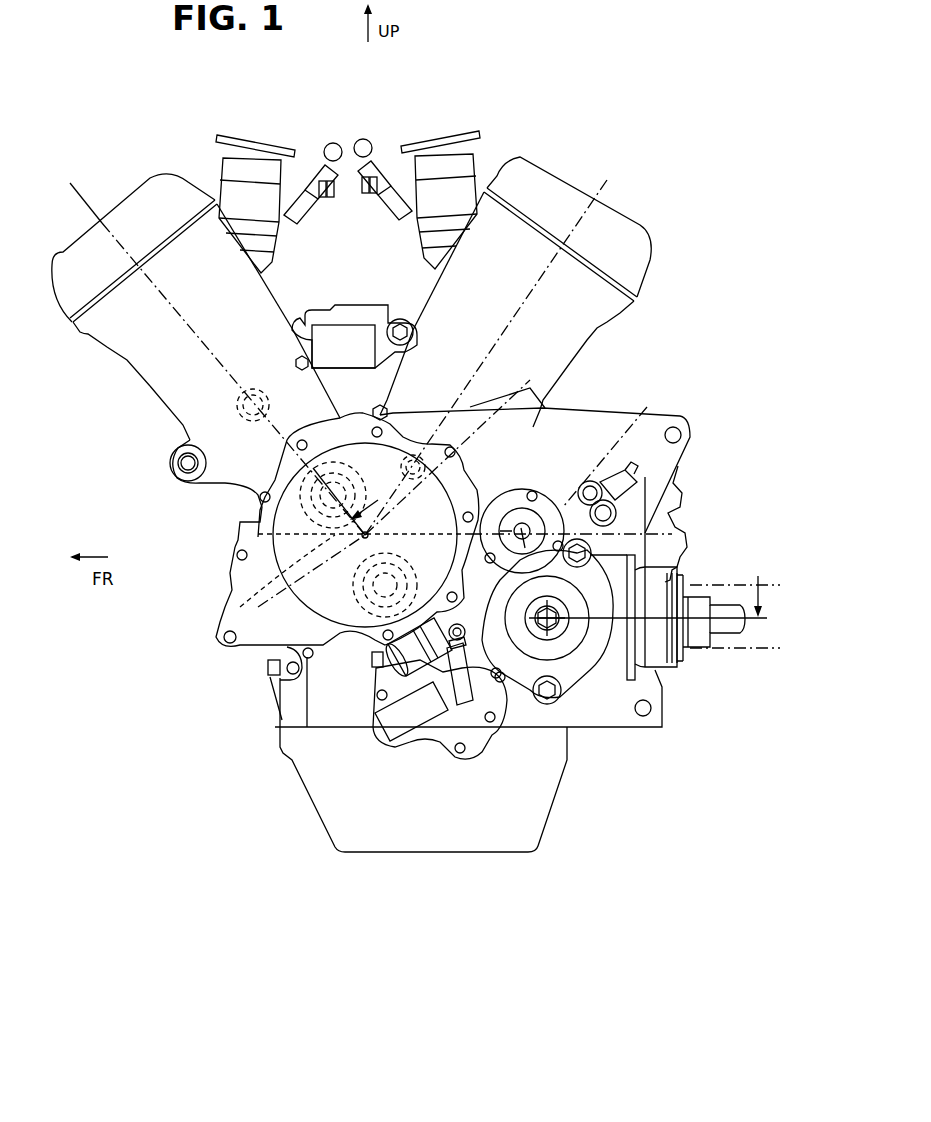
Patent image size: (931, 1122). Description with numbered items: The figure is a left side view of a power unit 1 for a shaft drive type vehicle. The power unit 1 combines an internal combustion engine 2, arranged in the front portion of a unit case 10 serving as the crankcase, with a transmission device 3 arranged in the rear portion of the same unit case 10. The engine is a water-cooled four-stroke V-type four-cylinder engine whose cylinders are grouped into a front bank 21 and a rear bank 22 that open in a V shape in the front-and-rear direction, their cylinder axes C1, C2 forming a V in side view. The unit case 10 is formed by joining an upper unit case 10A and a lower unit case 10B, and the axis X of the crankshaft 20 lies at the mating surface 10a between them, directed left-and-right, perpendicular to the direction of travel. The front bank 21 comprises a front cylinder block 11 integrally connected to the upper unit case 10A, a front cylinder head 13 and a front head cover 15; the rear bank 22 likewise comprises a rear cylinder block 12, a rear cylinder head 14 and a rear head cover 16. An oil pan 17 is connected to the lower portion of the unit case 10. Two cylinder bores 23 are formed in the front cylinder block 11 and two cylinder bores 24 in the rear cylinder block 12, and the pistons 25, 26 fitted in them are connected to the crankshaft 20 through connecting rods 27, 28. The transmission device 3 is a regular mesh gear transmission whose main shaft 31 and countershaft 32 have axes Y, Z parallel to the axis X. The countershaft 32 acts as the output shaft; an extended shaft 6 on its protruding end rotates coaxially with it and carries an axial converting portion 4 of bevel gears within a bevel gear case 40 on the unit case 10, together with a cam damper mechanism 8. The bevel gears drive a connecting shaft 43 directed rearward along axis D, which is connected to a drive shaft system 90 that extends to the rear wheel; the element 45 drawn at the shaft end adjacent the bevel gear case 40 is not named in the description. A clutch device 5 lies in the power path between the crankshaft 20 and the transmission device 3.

The power unit 1 is at (688, 104).
The internal combustion engine 2 is at (229, 505).
The transmission device 3 is at (705, 468).
The axial converting portion 4 is at (555, 638).
The clutch device 5 is at (625, 462).
The extended shaft 6 is at (642, 705).
The cam damper mechanism 8 is at (644, 701).
The unit case 10 is at (735, 495).
The upper unit case 10A is at (672, 512).
The lower unit case 10B is at (672, 534).
The mating surface 10a is at (240, 607).
The front cylinder block 11 is at (187, 433).
The rear cylinder block 12 is at (587, 430).
The front cylinder head 13 is at (150, 387).
The rear cylinder head 14 is at (570, 363).
The front head cover 15 is at (122, 200).
The rear head cover 16 is at (580, 188).
The oil pan 17 is at (455, 855).
The crankshaft 20 is at (258, 607).
The front bank 21 is at (167, 160).
The rear bank 22 is at (536, 149).
The cylinder bore 23 is at (265, 366).
The cylinder bore 24 is at (447, 350).
The piston 25 is at (236, 367).
The piston 26 is at (484, 355).
The connecting rod 27 is at (287, 535).
The connecting rod 28 is at (450, 488).
The main shaft 31 is at (647, 407).
The countershaft 32 is at (560, 635).
The bevel gear case 40 is at (590, 650).
The connecting shaft 43 is at (710, 600).
The bearing holder 45 is at (647, 667).
The drive shaft system 90 is at (710, 648).
The cylinder axis C1 is at (90, 200).
The cylinder axis C2 is at (607, 180).
The axis X is at (225, 616).
The axis Y is at (664, 436).
The axis Z is at (652, 700).
The axis D is at (718, 630).